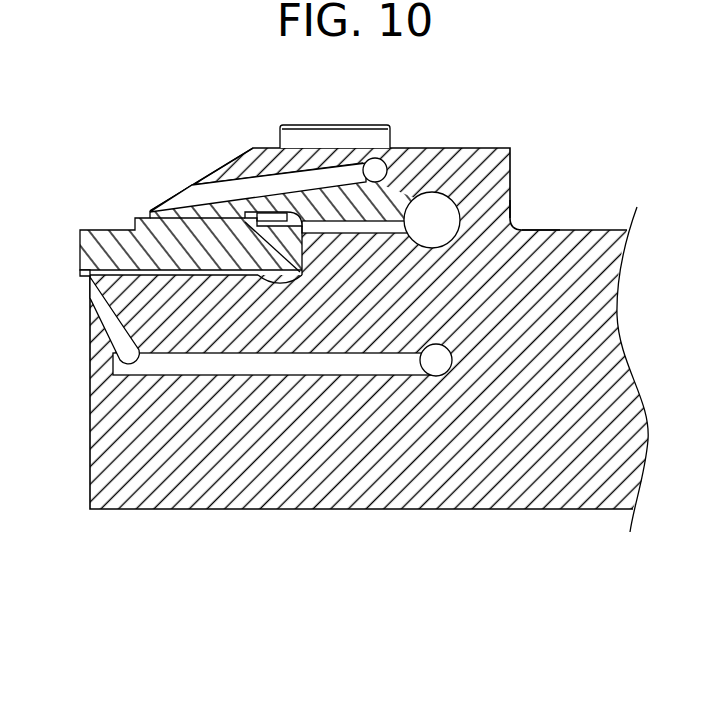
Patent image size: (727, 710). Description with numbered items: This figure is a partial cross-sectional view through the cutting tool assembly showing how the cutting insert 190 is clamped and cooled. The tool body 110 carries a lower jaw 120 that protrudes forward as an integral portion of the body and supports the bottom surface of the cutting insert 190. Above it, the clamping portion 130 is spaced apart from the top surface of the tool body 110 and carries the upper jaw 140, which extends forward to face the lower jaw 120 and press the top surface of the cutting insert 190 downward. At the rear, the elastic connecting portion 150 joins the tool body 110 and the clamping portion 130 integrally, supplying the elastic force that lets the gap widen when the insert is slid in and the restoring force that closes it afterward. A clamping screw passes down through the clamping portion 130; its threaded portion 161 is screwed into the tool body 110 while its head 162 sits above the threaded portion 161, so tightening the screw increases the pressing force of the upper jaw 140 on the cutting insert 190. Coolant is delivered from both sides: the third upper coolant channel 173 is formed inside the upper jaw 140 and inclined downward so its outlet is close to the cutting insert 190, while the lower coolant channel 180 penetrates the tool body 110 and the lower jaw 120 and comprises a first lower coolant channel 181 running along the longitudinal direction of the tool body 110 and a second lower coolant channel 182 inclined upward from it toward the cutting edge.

The tool body 110 is at (597, 240).
The lower jaw 120 is at (133, 288).
The clamping portion 130 is at (436, 156).
The upper jaw 140 is at (218, 178).
The elastic connecting portion 150 is at (504, 193).
The threaded portion 161 is at (340, 221).
The head 162 is at (339, 137).
The third upper coolant channel 173 is at (247, 189).
The lower coolant channel 180 is at (247, 454).
The first lower coolant channel 181 is at (224, 366).
The second lower coolant channel 182 is at (112, 332).
The cutting insert 190 is at (114, 238).